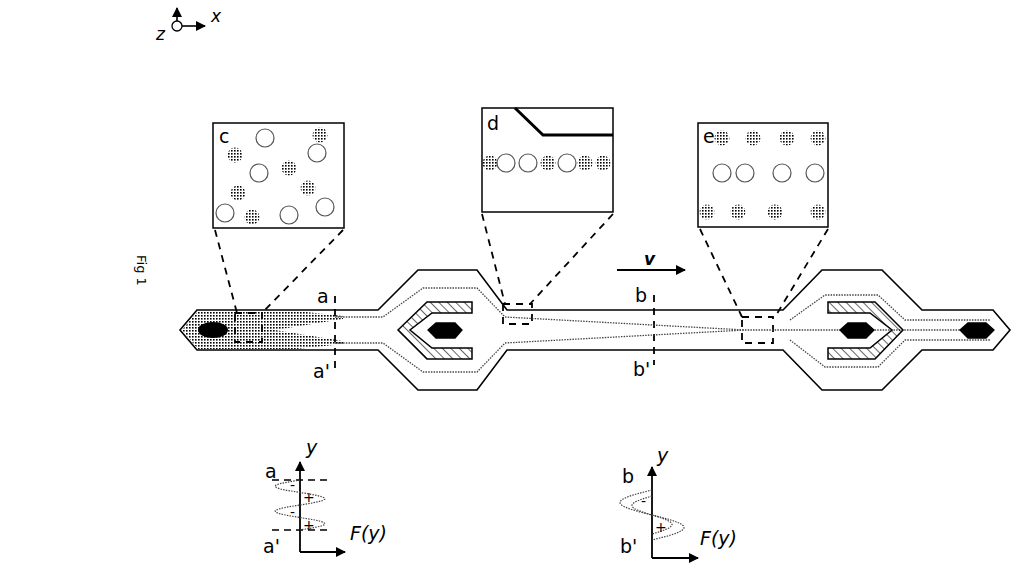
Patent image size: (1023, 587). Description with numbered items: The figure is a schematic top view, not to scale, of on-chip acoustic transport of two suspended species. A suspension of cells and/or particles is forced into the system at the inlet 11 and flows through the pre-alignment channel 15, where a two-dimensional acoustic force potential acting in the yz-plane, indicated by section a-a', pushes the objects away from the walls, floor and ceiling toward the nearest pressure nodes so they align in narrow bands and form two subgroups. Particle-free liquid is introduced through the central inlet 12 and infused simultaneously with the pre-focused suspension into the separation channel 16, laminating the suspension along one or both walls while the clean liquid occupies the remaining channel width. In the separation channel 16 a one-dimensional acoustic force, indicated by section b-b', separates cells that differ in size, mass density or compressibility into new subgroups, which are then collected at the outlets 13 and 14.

The suspension inlet 11 is at (205, 357).
The central inlet 12 is at (433, 338).
The first collection outlet 13 is at (873, 340).
The second collection outlet 14 is at (982, 345).
The pre-alignment channel 15 is at (302, 332).
The separation channel 16 is at (568, 328).